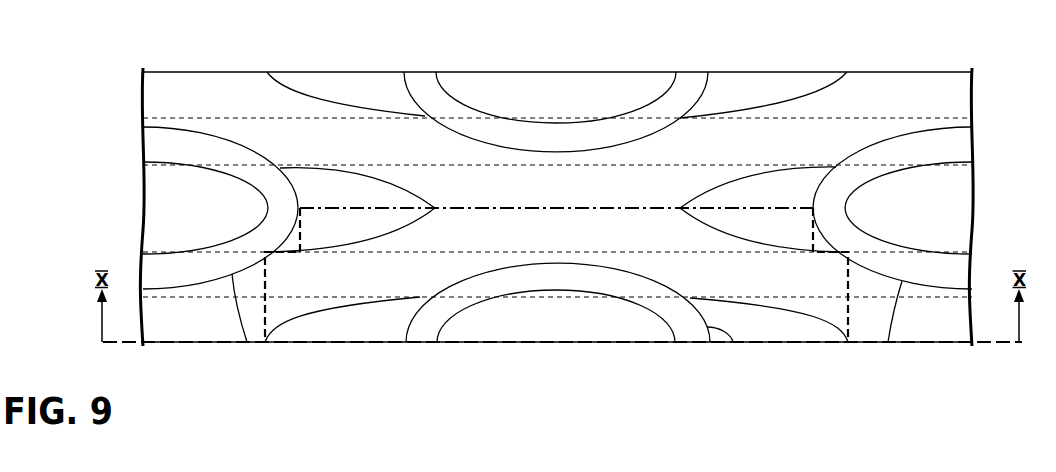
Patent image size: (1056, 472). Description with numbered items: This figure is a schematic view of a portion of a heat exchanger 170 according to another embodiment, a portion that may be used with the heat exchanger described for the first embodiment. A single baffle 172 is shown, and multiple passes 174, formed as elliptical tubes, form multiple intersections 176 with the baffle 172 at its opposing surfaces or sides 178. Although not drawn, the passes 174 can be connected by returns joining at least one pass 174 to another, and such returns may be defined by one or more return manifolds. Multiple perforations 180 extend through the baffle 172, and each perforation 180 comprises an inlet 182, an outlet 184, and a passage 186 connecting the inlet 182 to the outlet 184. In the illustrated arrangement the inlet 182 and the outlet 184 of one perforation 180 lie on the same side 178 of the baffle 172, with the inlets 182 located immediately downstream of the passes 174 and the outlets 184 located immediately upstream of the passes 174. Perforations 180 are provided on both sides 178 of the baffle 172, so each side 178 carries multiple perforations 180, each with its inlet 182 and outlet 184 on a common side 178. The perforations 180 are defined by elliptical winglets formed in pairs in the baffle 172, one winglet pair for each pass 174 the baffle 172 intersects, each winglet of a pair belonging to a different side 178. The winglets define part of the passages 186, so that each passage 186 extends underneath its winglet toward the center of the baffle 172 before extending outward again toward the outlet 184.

The heat exchanger 170 is at (111, 51).
The baffle 172 is at (168, 94).
The passes 174 is at (576, 92).
The intersections 176 is at (703, 96).
The sides 178 is at (200, 320).
The perforations 180 is at (384, 256).
The inlet 182 is at (355, 227).
The outlet 184 is at (794, 228).
The passage 186 is at (589, 232).